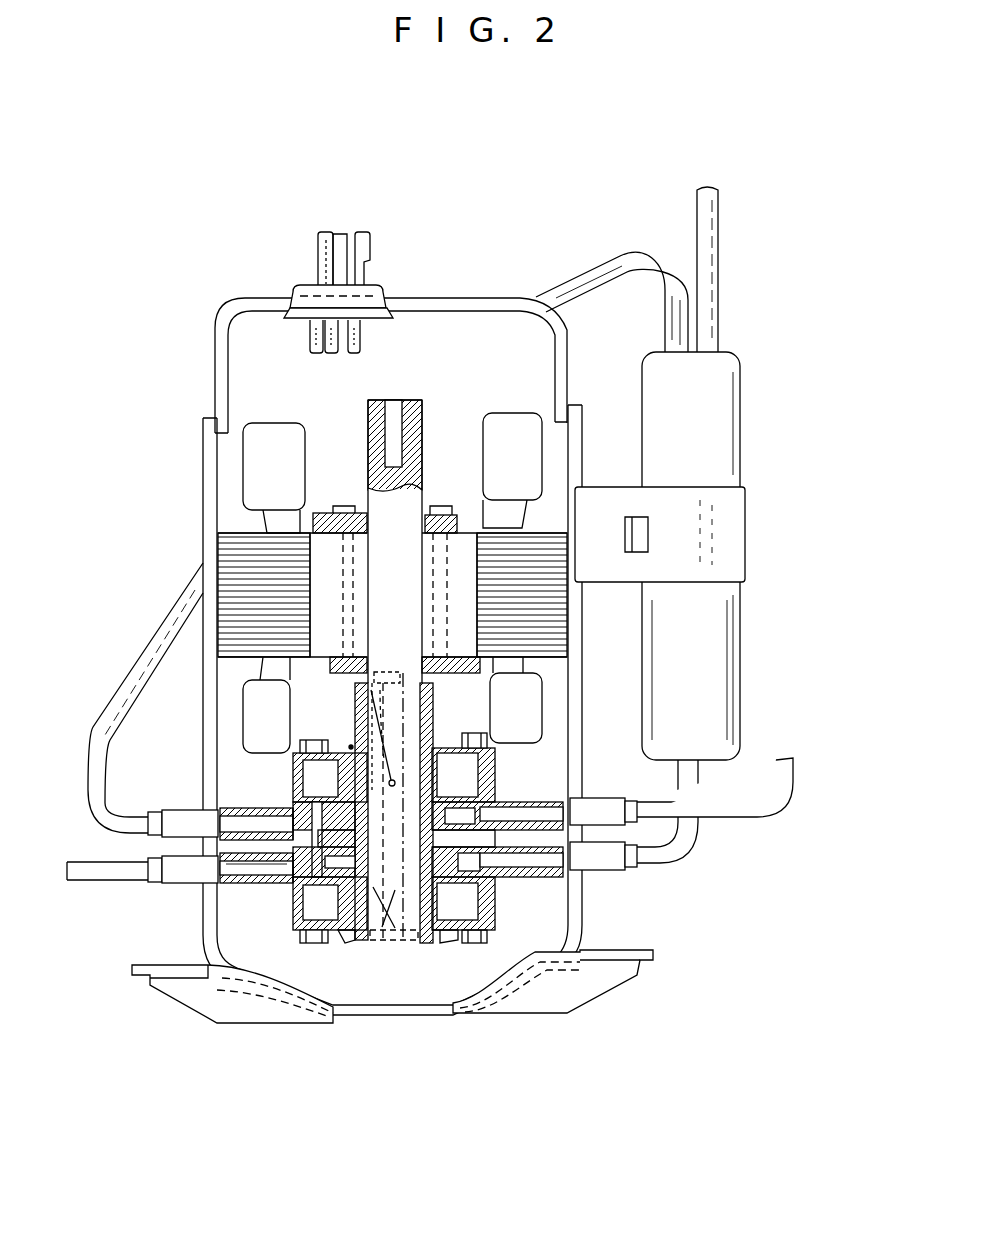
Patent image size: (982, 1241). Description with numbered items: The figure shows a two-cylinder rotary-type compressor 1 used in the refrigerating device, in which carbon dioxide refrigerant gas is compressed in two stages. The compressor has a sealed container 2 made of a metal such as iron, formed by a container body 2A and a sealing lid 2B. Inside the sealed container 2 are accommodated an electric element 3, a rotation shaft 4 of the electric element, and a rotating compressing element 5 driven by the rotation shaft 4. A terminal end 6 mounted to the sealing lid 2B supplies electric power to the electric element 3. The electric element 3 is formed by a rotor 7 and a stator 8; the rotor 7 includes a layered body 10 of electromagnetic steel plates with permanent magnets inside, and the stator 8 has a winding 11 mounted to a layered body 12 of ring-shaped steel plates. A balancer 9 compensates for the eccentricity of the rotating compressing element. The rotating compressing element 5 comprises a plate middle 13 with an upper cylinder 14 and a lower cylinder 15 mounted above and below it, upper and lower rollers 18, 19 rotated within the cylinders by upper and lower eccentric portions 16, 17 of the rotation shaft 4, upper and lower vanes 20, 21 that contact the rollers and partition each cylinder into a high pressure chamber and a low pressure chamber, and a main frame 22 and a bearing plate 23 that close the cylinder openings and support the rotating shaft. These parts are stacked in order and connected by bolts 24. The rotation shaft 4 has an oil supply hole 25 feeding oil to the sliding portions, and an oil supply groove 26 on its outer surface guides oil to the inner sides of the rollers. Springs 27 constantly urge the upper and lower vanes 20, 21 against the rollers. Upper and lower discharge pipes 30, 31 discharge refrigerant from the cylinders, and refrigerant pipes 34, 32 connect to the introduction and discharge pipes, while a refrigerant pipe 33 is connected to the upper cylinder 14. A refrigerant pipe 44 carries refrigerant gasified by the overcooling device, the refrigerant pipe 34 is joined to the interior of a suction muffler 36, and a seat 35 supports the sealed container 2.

The rotary-type compressor 1 is at (204, 315).
The sealed container 2 is at (208, 446).
The container body 2A is at (208, 512).
The sealing lid 2B is at (258, 300).
The electric element 3 is at (460, 480).
The rotation shaft 4 is at (403, 527).
The rotating compressing element 5 is at (446, 948).
The terminal end 6 is at (323, 232).
The rotor 7 is at (342, 513).
The stator 8 is at (272, 445).
The balancer 9 is at (490, 690).
The layered body 10 is at (460, 628).
The winding 11 is at (503, 432).
The layered body 12 is at (535, 537).
The plate middle 13 is at (650, 838).
The upper cylinder 14 is at (533, 797).
The lower cylinder 15 is at (480, 880).
The upper eccentric portion 16 is at (335, 773).
The lower eccentric portion 17 is at (399, 935).
The upper roller 18 is at (293, 808).
The lower roller 19 is at (333, 947).
The upper vane 20 is at (497, 763).
The lower vane 21 is at (487, 926).
The main frame 22 is at (350, 747).
The bearing plate 23 is at (340, 928).
The bolts 24 is at (470, 931).
The oil supply hole 25 is at (408, 673).
The oil supply groove 26 is at (362, 735).
The springs 27 is at (487, 860).
The upper discharge pipe 30 is at (240, 807).
The lower discharge pipe 31 is at (248, 884).
The refrigerant pipe 32 is at (118, 870).
The refrigerant pipe 33 is at (796, 762).
The refrigerant pipe 34 is at (600, 278).
The seat 35 is at (597, 983).
The suction muffler 36 is at (740, 380).
The refrigerant pipe 44 is at (712, 248).